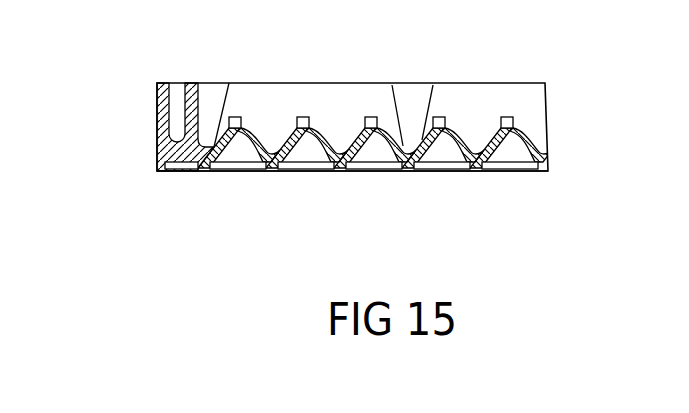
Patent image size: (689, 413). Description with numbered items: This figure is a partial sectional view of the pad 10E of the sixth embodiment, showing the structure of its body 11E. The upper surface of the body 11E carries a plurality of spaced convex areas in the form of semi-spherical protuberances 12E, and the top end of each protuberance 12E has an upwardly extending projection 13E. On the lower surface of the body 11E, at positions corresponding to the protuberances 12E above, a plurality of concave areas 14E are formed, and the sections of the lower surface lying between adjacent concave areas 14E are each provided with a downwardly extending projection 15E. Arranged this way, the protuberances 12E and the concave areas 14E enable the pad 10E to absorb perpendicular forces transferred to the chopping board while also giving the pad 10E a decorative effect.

The pad 10E is at (107, 39).
The body 11E is at (534, 171).
The semi-spherical protuberance 12E is at (257, 140).
The upwardly extending projection 13E is at (241, 117).
The concave area 14E is at (237, 163).
The downwardly extending projection 15E is at (272, 166).